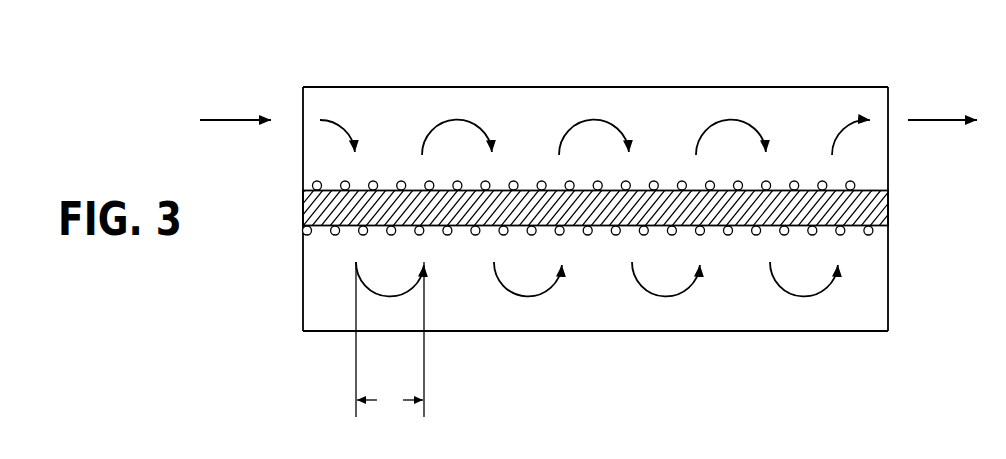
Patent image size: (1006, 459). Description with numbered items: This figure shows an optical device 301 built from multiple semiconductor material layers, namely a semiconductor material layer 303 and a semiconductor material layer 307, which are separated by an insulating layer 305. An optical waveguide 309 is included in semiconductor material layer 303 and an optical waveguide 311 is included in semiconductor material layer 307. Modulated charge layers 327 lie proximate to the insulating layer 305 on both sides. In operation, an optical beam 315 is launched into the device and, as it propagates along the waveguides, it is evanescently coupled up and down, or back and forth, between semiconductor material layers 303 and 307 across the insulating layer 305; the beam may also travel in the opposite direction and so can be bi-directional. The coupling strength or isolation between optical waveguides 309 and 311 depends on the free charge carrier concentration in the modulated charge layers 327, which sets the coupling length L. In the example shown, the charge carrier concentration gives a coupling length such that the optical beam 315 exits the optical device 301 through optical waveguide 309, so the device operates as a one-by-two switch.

The optical device 301 is at (959, 46).
The semiconductor material layer 303 is at (888, 153).
The insulating layer 305 is at (888, 207).
The semiconductor material layer 307 is at (888, 288).
The optical waveguide 309 is at (788, 87).
The optical waveguide 311 is at (762, 333).
The optical beam 315 is at (217, 113).
The modulated charge layers 327 is at (660, 181).